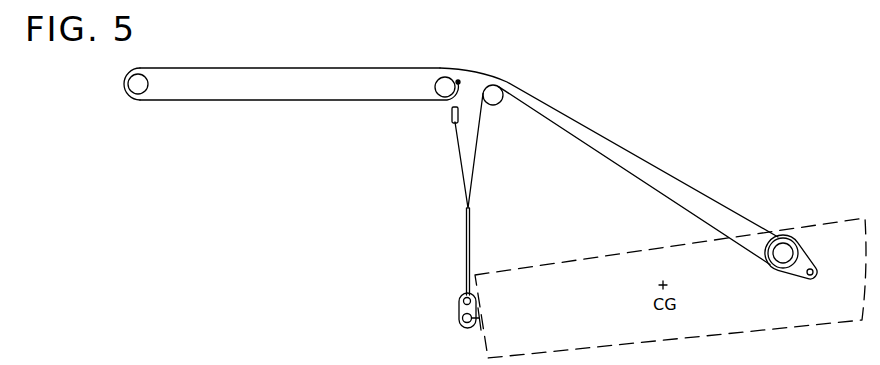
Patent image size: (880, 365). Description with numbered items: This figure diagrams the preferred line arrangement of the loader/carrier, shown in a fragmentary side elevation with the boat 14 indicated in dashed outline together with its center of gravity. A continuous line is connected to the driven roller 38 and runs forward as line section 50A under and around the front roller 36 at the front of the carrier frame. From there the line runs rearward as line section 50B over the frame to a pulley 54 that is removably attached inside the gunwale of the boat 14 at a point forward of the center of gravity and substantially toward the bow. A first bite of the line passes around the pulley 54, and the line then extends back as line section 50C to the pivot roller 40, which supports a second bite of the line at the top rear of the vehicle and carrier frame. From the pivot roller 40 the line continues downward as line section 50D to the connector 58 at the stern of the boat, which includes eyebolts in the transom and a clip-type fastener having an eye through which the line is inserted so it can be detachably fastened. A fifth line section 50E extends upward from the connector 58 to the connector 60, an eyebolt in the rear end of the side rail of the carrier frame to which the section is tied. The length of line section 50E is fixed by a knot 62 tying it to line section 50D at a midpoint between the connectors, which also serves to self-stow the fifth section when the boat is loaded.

The boat 14 is at (839, 226).
The front roller 36 is at (148, 84).
The driven roller 38 is at (434, 85).
The pivot roller 40 is at (500, 104).
The line section 50A is at (283, 100).
The line section 50B is at (289, 68).
The line section 50C is at (620, 168).
The line section 50D is at (474, 164).
The line section 50E is at (461, 164).
The pulley 54 is at (766, 238).
The connector 58 is at (458, 321).
The connector 60 is at (452, 114).
The knot 62 is at (466, 211).